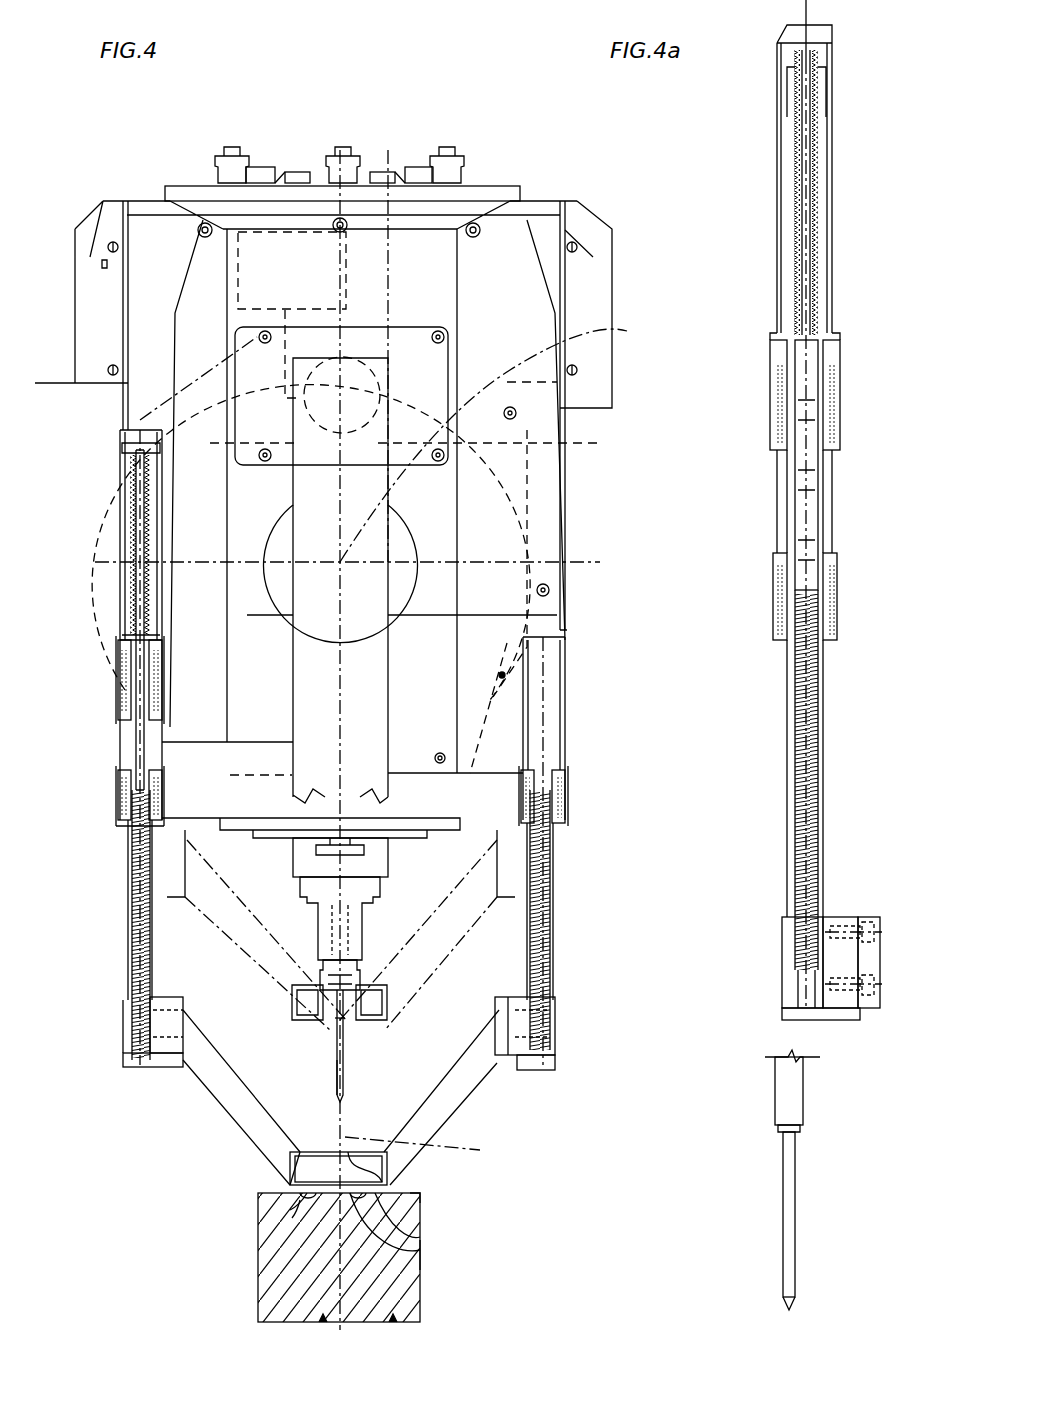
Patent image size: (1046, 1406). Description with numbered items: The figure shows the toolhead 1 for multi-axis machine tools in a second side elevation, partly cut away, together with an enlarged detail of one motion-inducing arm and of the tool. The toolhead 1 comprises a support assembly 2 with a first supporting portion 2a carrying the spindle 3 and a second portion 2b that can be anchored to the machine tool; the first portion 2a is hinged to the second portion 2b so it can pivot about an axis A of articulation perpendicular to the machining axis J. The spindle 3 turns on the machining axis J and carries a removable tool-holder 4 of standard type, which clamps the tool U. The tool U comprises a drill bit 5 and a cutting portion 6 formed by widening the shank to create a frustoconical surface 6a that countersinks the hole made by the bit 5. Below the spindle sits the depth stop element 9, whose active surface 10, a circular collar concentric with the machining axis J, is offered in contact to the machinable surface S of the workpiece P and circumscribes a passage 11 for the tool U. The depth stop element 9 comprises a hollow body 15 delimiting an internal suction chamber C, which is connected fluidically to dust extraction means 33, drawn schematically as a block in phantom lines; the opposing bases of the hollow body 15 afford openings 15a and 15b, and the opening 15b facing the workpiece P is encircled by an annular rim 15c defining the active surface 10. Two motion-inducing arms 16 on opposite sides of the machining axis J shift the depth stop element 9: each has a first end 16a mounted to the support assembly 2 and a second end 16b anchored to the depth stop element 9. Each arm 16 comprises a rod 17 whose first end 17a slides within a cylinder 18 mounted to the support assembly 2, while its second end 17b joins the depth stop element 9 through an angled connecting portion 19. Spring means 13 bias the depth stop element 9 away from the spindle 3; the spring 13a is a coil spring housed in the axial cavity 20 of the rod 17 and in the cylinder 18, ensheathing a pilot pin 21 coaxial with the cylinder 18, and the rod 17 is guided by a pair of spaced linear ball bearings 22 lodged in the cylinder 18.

In FIG. 4, the toolhead 1 is at (137, 178).
In FIG. 4, the support assembly 2 is at (570, 452).
In FIG. 4, the first supporting portion 2a is at (497, 757).
In FIG. 4, the second portion 2b is at (546, 283).
In FIG. 4, the spindle 3 is at (299, 862).
In FIG. 4, the tool-holder 4 is at (317, 928).
In FIG. 4, the drill bit 5 is at (336, 1098).
In FIG. 4, the cutting portion 6 is at (326, 1010).
In FIG. 4a, the cutting portion 6 is at (771, 1258).
In FIG. 4, the frustoconical surface 6a is at (338, 1023).
In FIG. 4a, the frustoconical surface 6a is at (777, 1129).
In FIG. 4, the depth stop element 9 is at (286, 1175).
In FIG. 4, the active surface 10 is at (422, 1258).
In FIG. 4, the passage 11 is at (322, 1160).
In FIG. 4, the spring means 13 is at (135, 592).
In FIG. 4a, the spring means 13 is at (817, 800).
In FIG. 4, the spring 13a is at (134, 864).
In FIG. 4a, the spring 13a is at (814, 845).
In FIG. 4, the hollow body 15 is at (306, 1194).
In FIG. 4, the opening 15a is at (421, 1196).
In FIG. 4, the opening 15b is at (413, 1256).
In FIG. 4, the annular rim 15c is at (300, 1200).
In FIG. 4, the motion-inducing arm 16 is at (116, 814).
In FIG. 4, the first end 16a is at (117, 712).
In FIG. 4, the second end 16b is at (268, 1166).
In FIG. 4, the rod 17 is at (127, 920).
In FIG. 4a, the rod 17 is at (825, 762).
In FIG. 4, the first end 17a is at (130, 632).
In FIG. 4, the second end 17b is at (130, 1040).
In FIG. 4, the cylinder 18 is at (120, 549).
In FIG. 4a, the cylinder 18 is at (776, 183).
In FIG. 4, the connecting portion 19 is at (150, 1013).
In FIG. 4a, the connecting portion 19 is at (832, 968).
In FIG. 4, the axial cavity 20 is at (138, 757).
In FIG. 4a, the axial cavity 20 is at (799, 526).
In FIG. 4, the pilot pin 21 is at (138, 512).
In FIG. 4a, the pilot pin 21 is at (808, 196).
In FIG. 4, the linear ball bearings 22 is at (162, 668).
In FIG. 4a, the linear ball bearings 22 is at (782, 420).
In FIG. 4, the dust extraction means 33 is at (292, 270).
In FIG. 4, the axis of articulation A is at (392, 441).
In FIG. 4, the suction chamber C is at (376, 1002).
In FIG. 4, the machining axis J is at (421, 1150).
In FIG. 4, the workpiece P is at (264, 1283).
In FIG. 4, the machinable surface S is at (413, 1190).
In FIG. 4, the tool U is at (346, 1067).
In FIG. 4a, the tool U is at (766, 1122).